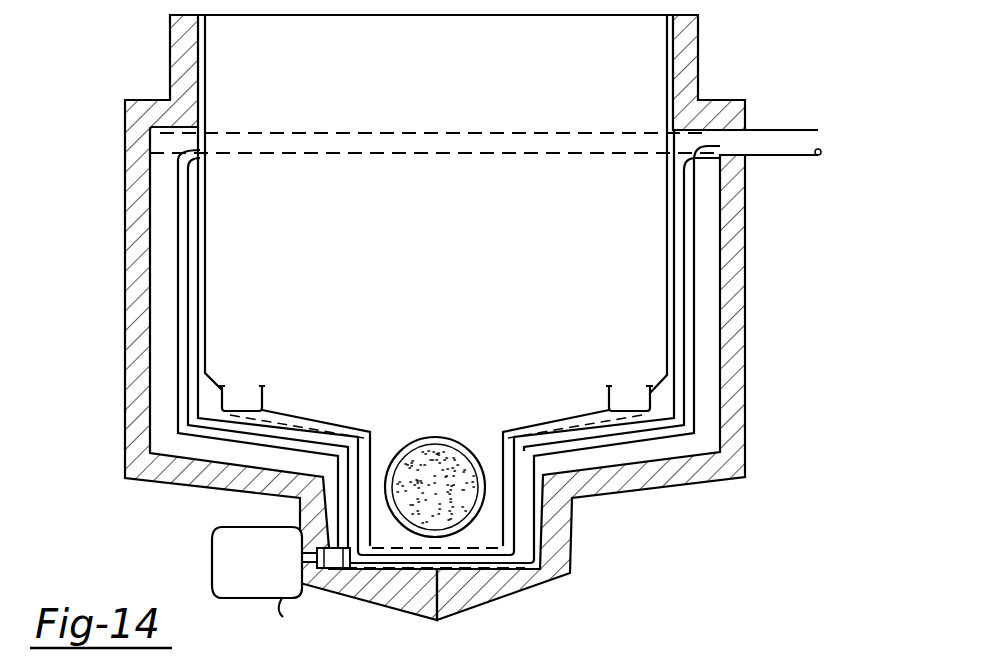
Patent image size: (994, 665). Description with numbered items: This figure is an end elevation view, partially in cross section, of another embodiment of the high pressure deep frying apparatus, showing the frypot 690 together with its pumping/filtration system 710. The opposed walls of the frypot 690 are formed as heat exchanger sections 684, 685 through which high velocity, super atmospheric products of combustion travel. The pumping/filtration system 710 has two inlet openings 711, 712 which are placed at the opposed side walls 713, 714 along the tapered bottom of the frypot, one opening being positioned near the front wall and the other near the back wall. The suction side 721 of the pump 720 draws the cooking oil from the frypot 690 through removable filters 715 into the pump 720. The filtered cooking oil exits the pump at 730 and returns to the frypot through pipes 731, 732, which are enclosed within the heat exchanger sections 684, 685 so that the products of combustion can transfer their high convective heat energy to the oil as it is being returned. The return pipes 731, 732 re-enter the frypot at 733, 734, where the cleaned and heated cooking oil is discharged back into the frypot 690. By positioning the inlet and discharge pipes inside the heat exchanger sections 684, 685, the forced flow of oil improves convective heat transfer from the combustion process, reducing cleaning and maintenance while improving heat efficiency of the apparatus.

The heat exchanger section 684 is at (165, 350).
The heat exchanger section 685 is at (712, 328).
The frypot 690 is at (700, 30).
The pumping/filtration system 710 is at (213, 558).
The inlet opening 711 is at (267, 397).
The inlet opening 712 is at (605, 398).
The opposed side wall 713 is at (208, 258).
The opposed side wall 714 is at (668, 282).
The removable filter 715 is at (238, 402).
The pump 720 is at (295, 622).
The suction side 721 is at (382, 556).
The pump exit 730 is at (327, 548).
The return pipe 731 is at (182, 185).
The return pipe 732 is at (688, 237).
The re-entry point 733 is at (205, 150).
The re-entry point 734 is at (672, 147).